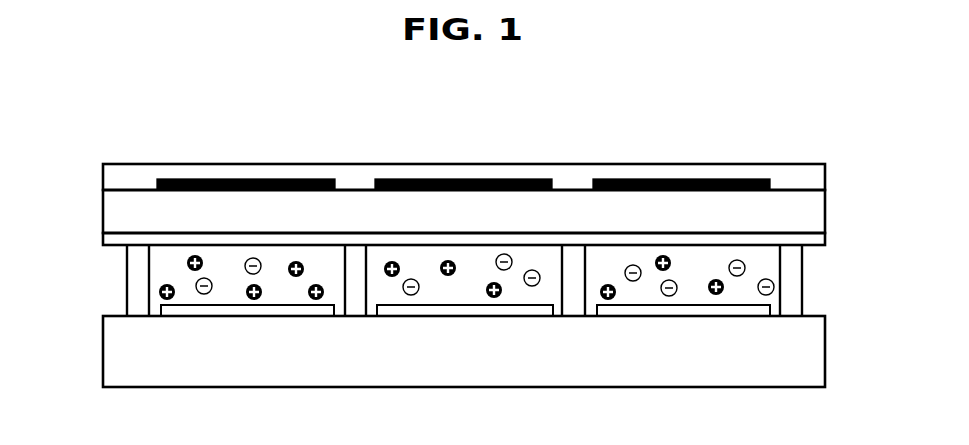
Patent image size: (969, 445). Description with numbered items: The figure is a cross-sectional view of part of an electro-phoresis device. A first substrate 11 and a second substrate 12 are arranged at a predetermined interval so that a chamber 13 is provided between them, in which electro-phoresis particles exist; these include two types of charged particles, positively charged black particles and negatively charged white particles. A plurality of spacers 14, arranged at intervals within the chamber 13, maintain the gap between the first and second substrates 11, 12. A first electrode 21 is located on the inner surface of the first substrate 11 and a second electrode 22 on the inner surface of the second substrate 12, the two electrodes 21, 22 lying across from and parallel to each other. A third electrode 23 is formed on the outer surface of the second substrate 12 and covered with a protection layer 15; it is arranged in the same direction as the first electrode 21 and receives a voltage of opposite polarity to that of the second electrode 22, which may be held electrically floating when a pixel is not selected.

The first substrate 11 is at (813, 347).
The second substrate 12 is at (815, 215).
The chamber 13 is at (155, 259).
The spacers 14 is at (135, 292).
The protection layer 15 is at (808, 177).
The first electrode 21 is at (238, 311).
The second electrode 22 is at (810, 242).
The third electrode 23 is at (250, 179).